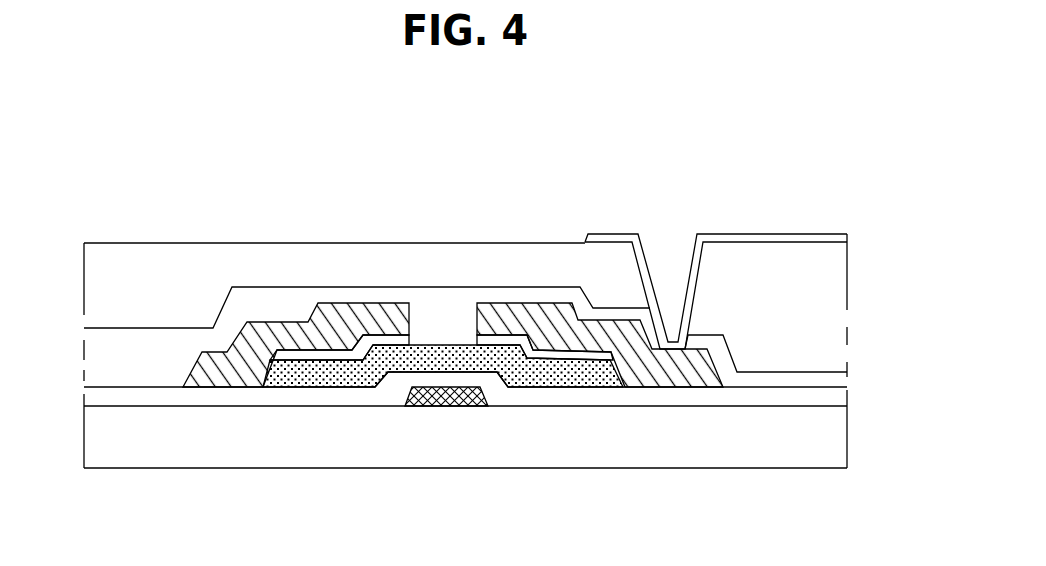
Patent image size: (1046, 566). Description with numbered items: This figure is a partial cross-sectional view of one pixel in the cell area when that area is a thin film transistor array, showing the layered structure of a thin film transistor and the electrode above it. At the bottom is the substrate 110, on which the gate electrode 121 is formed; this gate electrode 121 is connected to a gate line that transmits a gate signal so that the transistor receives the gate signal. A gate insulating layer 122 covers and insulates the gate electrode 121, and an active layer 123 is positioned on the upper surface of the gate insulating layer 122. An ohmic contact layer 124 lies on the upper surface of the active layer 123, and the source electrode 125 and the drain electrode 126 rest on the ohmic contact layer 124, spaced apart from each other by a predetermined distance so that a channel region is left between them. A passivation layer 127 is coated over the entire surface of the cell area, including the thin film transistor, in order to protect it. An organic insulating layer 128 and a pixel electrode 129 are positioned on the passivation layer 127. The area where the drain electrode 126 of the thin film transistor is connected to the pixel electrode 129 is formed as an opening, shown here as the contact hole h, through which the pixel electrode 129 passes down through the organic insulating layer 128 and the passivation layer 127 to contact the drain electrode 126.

The substrate 110 is at (777, 452).
The gate electrode 121 is at (442, 405).
The gate insulating layer 122 is at (538, 395).
The active layer 123 is at (373, 383).
The ohmic contact layer 124 is at (295, 360).
The source electrode 125 is at (218, 377).
The drain electrode 126 is at (658, 373).
The passivation layer 127 is at (432, 297).
The organic insulating layer 128 is at (523, 270).
The pixel electrode 129 is at (603, 237).
The contact hole h is at (675, 278).